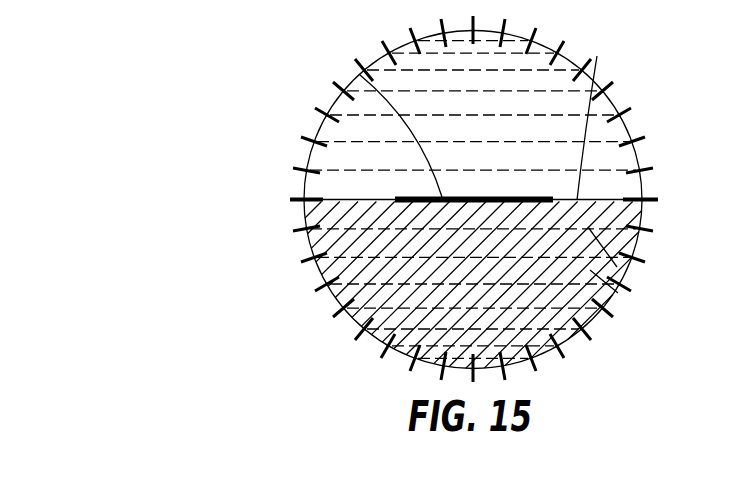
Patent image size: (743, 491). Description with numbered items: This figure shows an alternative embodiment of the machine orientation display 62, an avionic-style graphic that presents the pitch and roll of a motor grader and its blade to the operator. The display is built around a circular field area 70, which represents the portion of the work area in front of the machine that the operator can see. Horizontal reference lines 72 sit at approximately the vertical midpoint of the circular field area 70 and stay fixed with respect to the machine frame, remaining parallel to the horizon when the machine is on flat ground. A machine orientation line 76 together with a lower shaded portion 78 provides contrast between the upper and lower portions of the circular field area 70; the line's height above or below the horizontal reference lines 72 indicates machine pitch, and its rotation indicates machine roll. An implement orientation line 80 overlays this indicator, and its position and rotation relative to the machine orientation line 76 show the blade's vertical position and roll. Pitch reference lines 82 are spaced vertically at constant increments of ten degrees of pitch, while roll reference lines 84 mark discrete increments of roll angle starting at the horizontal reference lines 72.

The machine orientation display 62 is at (300, 82).
The circular field area 70 is at (597, 56).
The horizontal reference lines 72 is at (298, 198).
The machine orientation line 76 is at (620, 147).
The lower shaded portion 78 is at (590, 322).
The implement orientation line 80 is at (360, 75).
The pitch reference lines 82 is at (592, 152).
The roll reference lines 84 is at (445, 28).